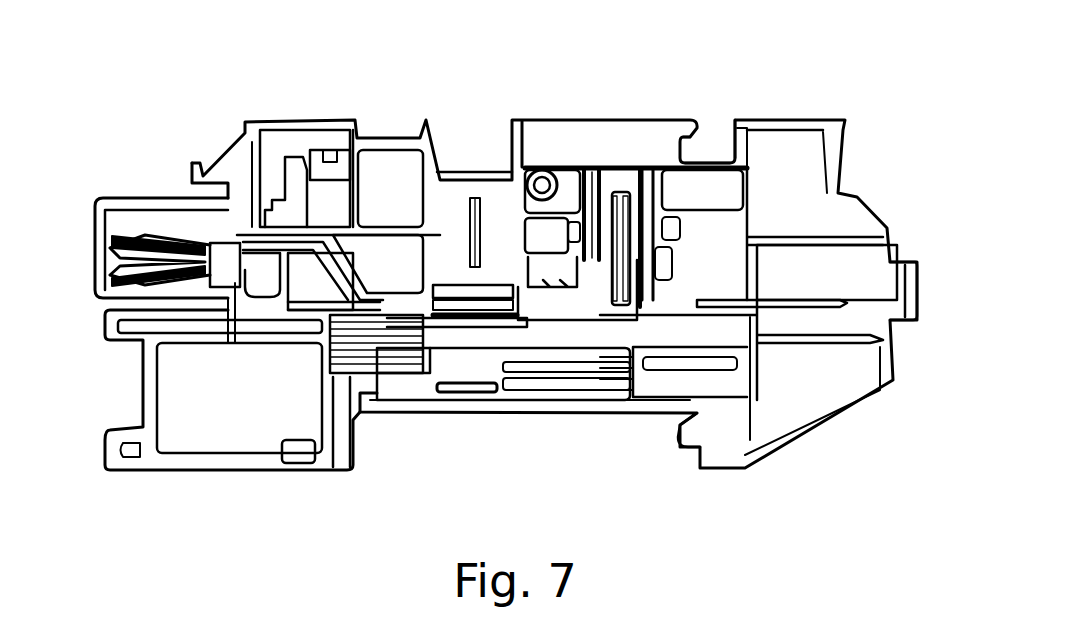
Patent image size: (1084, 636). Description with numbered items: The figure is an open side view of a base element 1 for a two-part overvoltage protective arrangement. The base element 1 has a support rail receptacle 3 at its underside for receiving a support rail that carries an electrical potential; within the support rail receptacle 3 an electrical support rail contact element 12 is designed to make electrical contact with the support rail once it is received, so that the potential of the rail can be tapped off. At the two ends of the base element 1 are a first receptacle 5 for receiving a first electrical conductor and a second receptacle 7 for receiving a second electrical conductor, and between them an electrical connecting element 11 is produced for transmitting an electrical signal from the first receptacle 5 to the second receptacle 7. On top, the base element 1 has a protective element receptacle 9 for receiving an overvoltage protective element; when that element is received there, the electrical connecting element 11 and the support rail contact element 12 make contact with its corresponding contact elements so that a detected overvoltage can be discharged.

The base element 1 is at (156, 76).
The support rail receptacle 3 is at (442, 432).
The first receptacle 5 is at (942, 284).
The second receptacle 7 is at (80, 251).
The protective element receptacle 9 is at (712, 128).
The electrical connecting element 11 is at (560, 335).
The electrical support rail contact element 12 is at (680, 433).